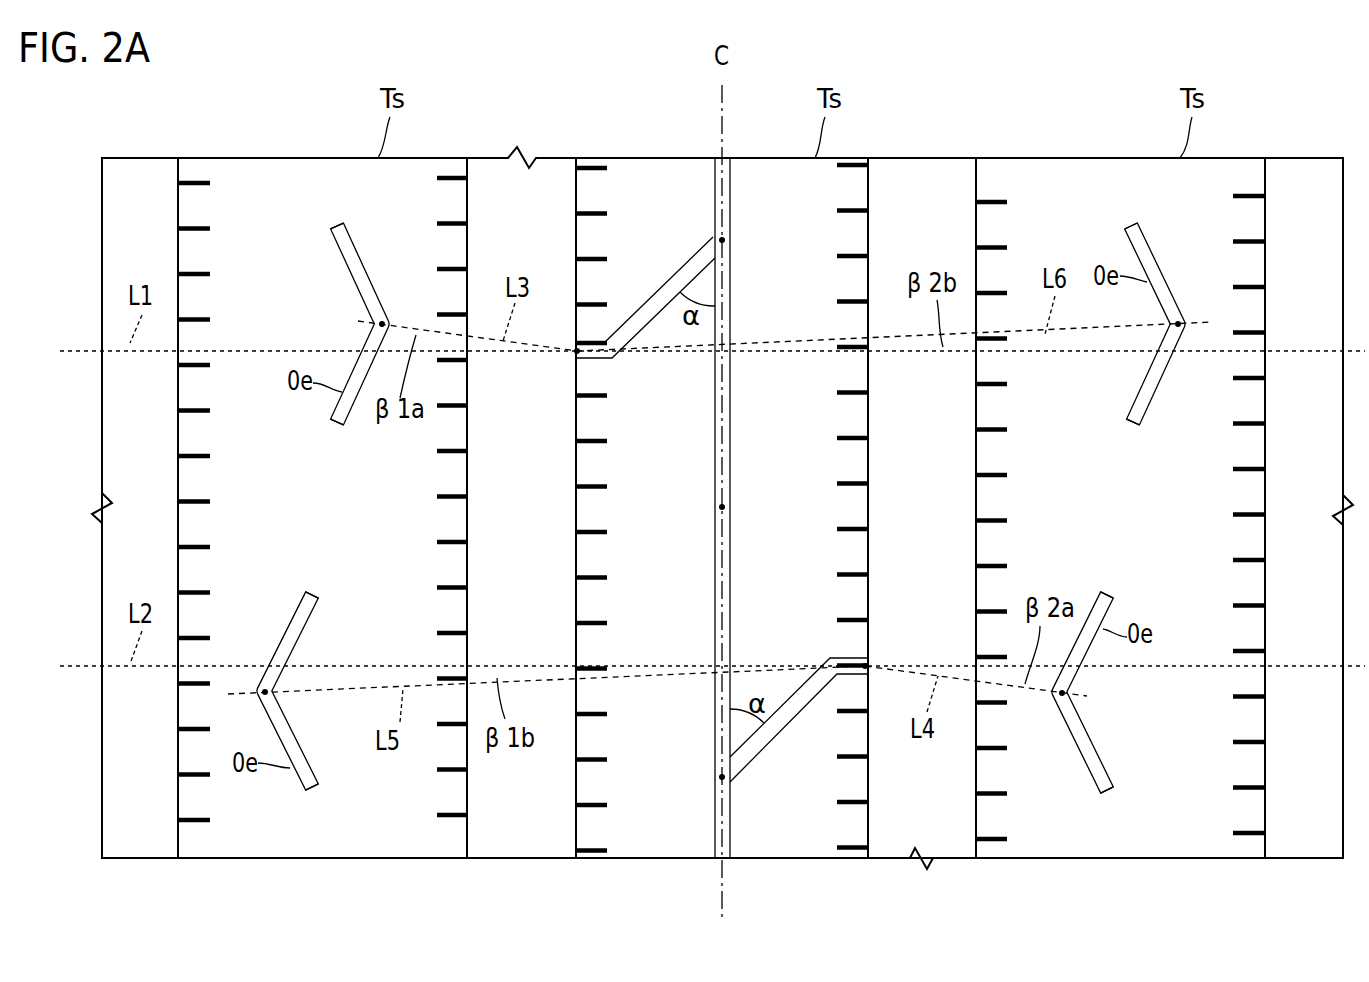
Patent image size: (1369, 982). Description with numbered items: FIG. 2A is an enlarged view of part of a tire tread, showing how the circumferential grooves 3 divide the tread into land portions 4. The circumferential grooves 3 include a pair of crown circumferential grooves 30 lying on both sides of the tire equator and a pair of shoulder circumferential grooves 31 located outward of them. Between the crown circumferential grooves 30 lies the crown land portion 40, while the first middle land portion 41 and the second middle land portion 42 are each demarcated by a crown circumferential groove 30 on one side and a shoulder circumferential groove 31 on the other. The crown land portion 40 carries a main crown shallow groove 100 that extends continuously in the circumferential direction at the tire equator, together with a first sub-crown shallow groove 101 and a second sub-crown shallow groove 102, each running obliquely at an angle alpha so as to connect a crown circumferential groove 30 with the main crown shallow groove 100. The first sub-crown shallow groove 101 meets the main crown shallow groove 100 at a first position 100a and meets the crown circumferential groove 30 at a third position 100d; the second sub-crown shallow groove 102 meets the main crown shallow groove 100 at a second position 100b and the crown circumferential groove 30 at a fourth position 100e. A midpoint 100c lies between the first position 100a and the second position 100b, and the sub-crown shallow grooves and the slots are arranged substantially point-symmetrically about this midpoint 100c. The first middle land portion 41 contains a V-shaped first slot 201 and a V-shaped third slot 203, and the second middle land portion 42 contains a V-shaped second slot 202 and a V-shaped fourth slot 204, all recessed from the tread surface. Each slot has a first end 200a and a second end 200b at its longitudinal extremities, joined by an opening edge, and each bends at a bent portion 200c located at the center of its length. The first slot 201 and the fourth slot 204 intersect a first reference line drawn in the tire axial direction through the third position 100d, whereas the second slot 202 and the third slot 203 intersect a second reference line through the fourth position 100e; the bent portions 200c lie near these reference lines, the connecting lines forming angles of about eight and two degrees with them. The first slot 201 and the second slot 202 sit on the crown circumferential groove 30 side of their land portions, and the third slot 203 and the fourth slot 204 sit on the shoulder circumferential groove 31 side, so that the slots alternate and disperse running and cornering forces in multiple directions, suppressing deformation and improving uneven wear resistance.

The circumferential grooves 3 is at (722, 904).
The crown circumferential grooves 30 is at (726, 554).
The shoulder circumferential grooves 31 is at (722, 554).
The land portions 4 is at (722, 112).
The crown land portion 40 is at (640, 146).
The first middle land portion 41 is at (288, 146).
The second middle land portion 42 is at (1055, 146).
The main crown shallow groove 100 is at (731, 156).
The first position 100a is at (724, 240).
The second position 100b is at (720, 777).
The midpoint 100c is at (724, 507).
The third position 100d is at (575, 353).
The fourth position 100e is at (866, 665).
The first sub-crown shallow groove 101 is at (651, 287).
The second sub-crown shallow groove 102 is at (799, 728).
The first end 200a is at (721, 383).
The second end 200b is at (720, 635).
The bent portion 200c is at (718, 513).
The first slot 201 is at (333, 266).
The second slot 202 is at (1117, 768).
The third slot 203 is at (321, 628).
The fourth slot 204 is at (1124, 397).